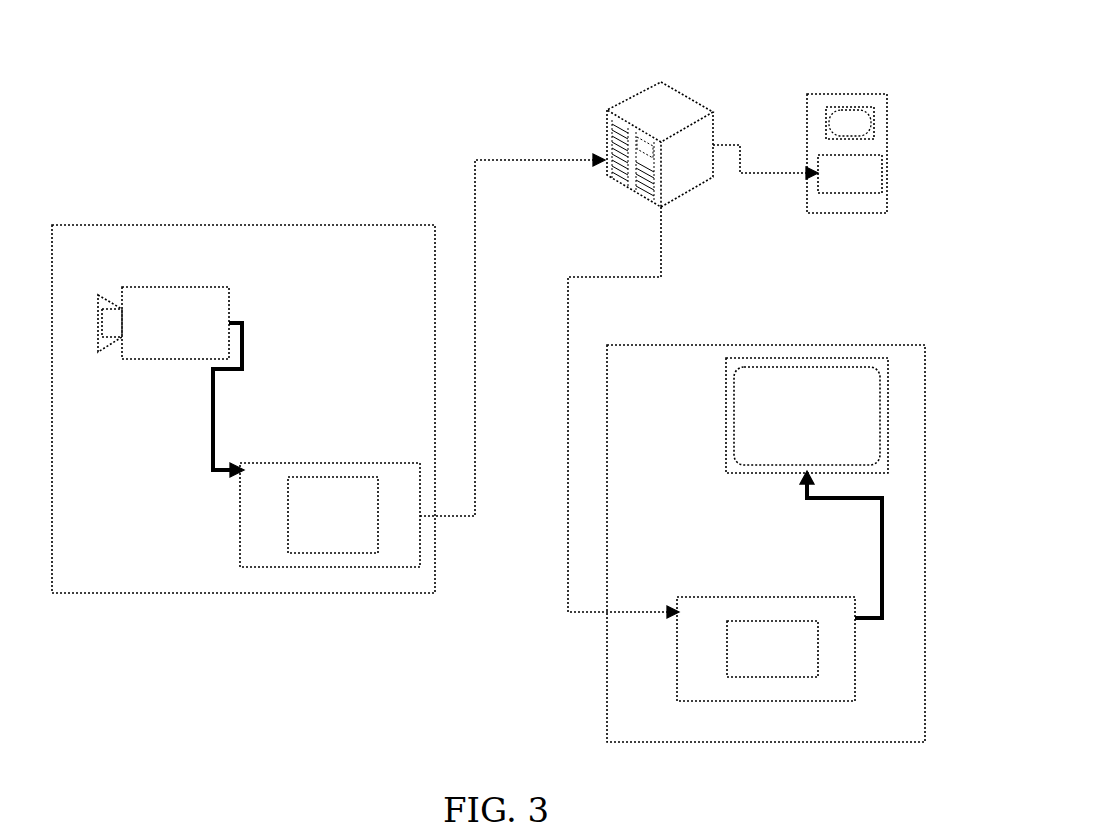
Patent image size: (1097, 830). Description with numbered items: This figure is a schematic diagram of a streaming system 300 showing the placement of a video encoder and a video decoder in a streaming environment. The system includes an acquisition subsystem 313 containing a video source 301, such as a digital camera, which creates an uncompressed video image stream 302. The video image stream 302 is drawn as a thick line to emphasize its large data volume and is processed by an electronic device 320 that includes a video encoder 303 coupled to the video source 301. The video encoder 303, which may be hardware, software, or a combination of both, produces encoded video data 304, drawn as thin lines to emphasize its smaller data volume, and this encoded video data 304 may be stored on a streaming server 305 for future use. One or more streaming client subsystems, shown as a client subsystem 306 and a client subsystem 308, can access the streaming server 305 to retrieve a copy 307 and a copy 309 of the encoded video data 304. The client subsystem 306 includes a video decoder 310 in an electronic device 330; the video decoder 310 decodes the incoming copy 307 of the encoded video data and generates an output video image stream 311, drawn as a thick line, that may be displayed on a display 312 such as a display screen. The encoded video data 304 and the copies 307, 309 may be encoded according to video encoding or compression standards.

The system 300 is at (795, 47).
The video source 301 is at (178, 287).
The video image stream 302 is at (213, 428).
The video encoder 303 is at (333, 515).
The encoded video data 304 is at (475, 190).
The streaming server 305 is at (607, 143).
The client subsystem 306 is at (607, 725).
The copy of encoded video data 307 is at (568, 470).
The client subsystem 308 is at (887, 112).
The copy of encoded video data 309 is at (745, 175).
The video decoder 310 is at (772, 649).
The output video image stream 311 is at (882, 548).
The display 312 is at (726, 420).
The acquisition subsystem 313 is at (171, 593).
The electronic device 320 is at (340, 463).
The electronic device 330 is at (677, 680).